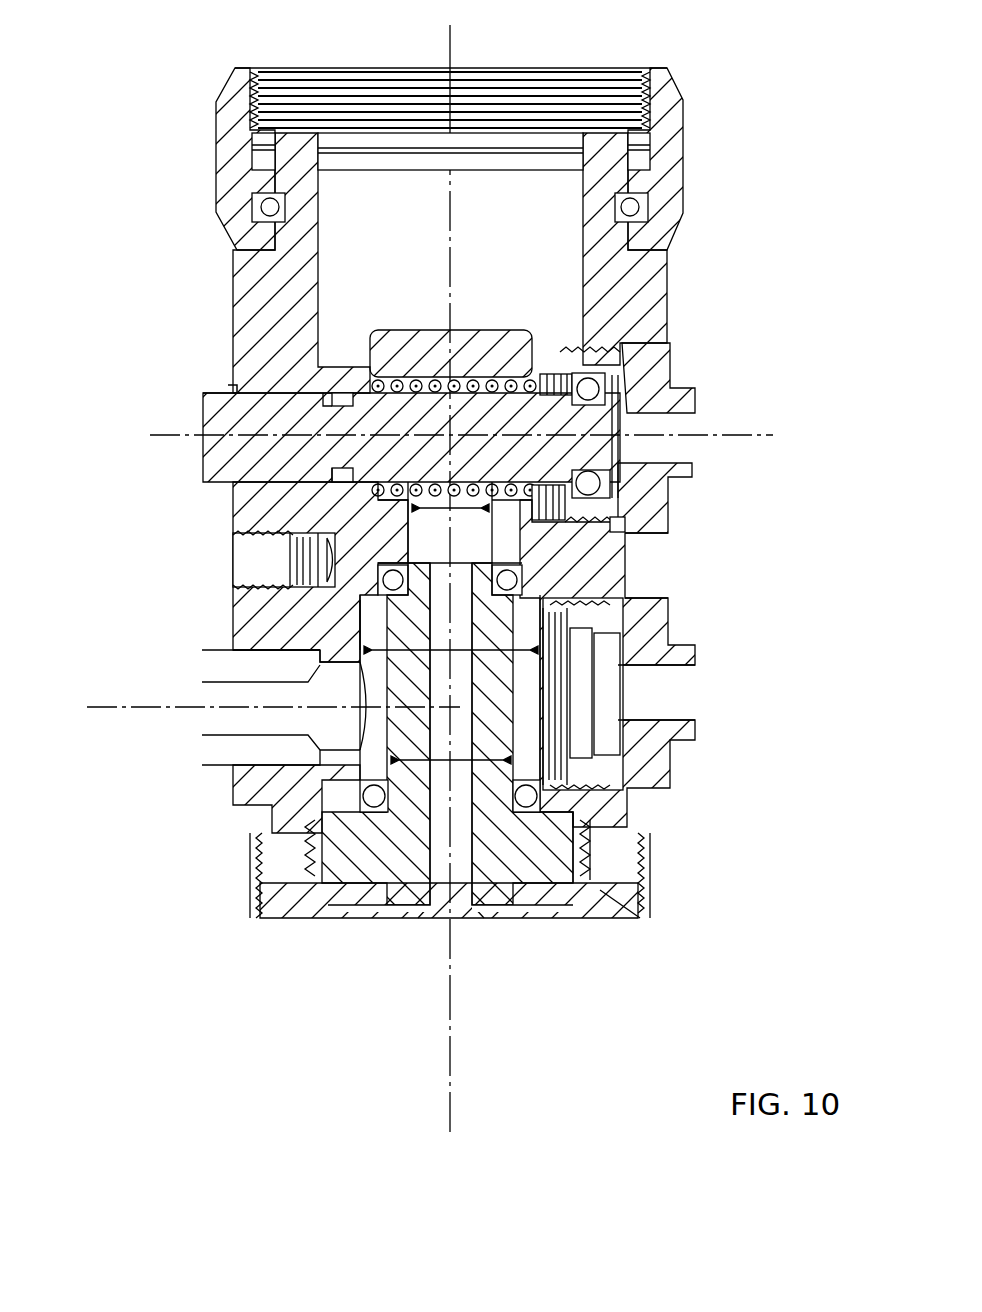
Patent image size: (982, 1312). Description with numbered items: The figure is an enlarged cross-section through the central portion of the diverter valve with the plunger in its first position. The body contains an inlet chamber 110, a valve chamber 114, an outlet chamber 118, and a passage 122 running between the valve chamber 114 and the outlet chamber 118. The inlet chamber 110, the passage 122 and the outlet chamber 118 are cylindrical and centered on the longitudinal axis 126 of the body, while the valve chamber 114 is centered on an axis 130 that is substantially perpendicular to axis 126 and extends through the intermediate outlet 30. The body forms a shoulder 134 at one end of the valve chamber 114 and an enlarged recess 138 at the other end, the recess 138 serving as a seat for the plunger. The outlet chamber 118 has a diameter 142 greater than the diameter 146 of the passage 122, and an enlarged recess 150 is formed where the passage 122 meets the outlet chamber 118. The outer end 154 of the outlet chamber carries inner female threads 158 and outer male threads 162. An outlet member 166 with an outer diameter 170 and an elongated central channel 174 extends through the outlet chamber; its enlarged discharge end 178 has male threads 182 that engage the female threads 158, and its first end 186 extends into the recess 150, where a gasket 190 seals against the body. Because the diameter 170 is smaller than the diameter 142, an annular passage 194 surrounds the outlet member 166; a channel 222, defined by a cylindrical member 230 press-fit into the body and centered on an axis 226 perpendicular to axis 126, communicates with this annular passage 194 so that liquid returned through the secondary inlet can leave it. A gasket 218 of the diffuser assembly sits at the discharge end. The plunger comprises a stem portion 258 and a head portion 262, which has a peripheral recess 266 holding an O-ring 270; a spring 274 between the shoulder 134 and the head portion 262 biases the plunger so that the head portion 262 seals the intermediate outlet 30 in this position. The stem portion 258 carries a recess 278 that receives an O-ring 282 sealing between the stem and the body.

The intermediate outlet 30 is at (685, 412).
The inlet chamber 110 is at (578, 282).
The valve chamber 114 is at (428, 386).
The outlet chamber 118 is at (375, 600).
The passage 122 is at (330, 515).
The longitudinal axis 126 is at (450, 1128).
The axis 130 is at (154, 434).
The shoulder 134 is at (392, 392).
The enlarged recess 138 is at (523, 373).
The diameter 142 is at (548, 690).
The diameter 146 is at (515, 548).
The enlarged recess 150 is at (520, 575).
The outer end 154 is at (645, 900).
The inner female threads 158 is at (592, 835).
The outer male threads 162 is at (648, 857).
The outlet member 166 is at (375, 885).
The outer diameter 170 is at (300, 718).
The central channel 174 is at (468, 887).
The discharge end 178 is at (543, 870).
The male threads 182 is at (255, 838).
The first end 186 is at (320, 527).
The gasket 190 is at (560, 582).
The annular passage 194 is at (330, 632).
The gasket 218 is at (600, 900).
The channel 222 is at (215, 682).
The axis 226 is at (87, 710).
The cylindrical member 230 is at (220, 747).
The stem portion 258 is at (222, 411).
The head portion 262 is at (585, 452).
The peripheral recess 266 is at (612, 388).
The O-ring 270 is at (245, 398).
The spring 274 is at (462, 384).
The recess 278 is at (323, 396).
The O-ring 282 is at (342, 400).